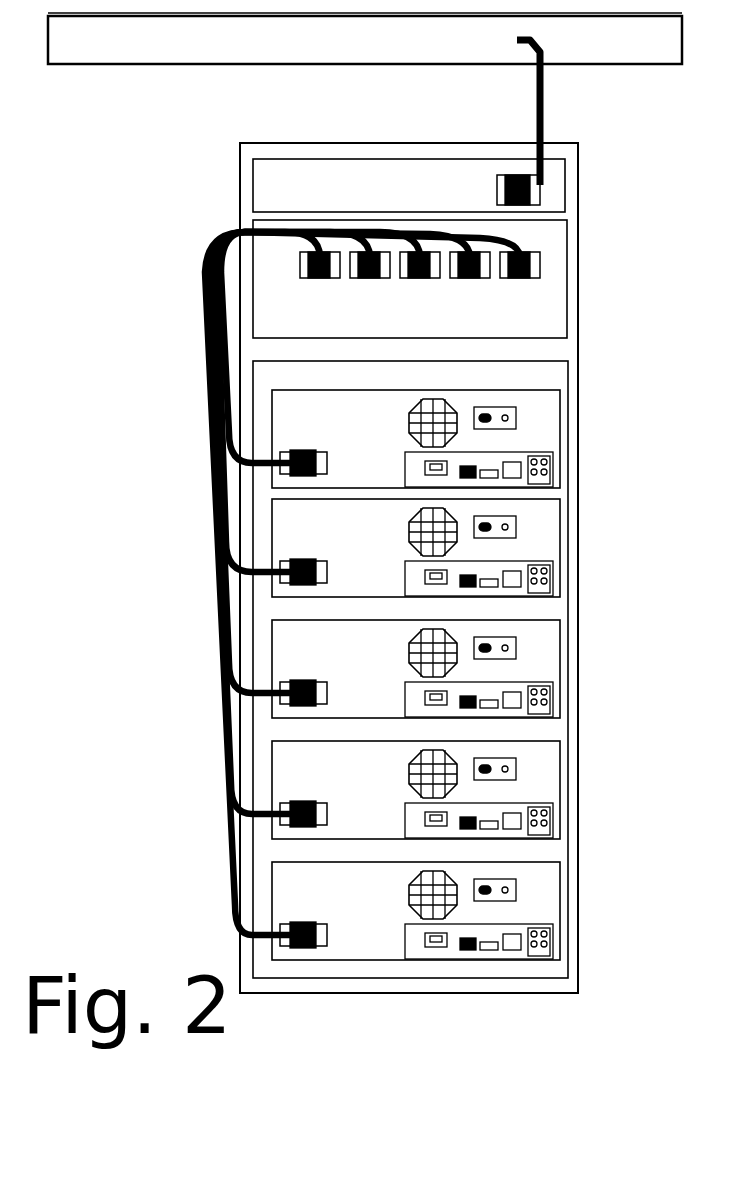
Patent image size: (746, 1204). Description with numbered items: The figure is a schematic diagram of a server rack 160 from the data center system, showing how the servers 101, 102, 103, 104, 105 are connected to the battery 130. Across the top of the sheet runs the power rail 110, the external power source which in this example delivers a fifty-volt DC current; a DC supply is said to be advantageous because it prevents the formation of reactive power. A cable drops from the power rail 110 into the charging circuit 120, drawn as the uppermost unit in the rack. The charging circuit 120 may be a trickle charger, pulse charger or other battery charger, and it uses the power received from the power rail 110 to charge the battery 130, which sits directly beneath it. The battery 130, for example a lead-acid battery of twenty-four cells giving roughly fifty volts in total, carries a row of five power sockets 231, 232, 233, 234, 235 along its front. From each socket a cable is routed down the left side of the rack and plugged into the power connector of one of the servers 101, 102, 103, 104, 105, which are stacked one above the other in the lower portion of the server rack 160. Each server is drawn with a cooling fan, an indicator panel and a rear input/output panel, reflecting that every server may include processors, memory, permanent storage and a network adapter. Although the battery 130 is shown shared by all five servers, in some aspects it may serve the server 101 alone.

The power rail 110 is at (181, 64).
The charging circuit 120 is at (565, 190).
The battery 130 is at (567, 295).
The server rack 160 is at (578, 548).
The power socket 231 is at (318, 281).
The power socket 232 is at (371, 281).
The power socket 233 is at (422, 281).
The power socket 234 is at (476, 281).
The power socket 235 is at (528, 281).
The server 101 is at (313, 421).
The server 102 is at (313, 530).
The server 103 is at (313, 651).
The server 104 is at (313, 772).
The server 105 is at (313, 893).